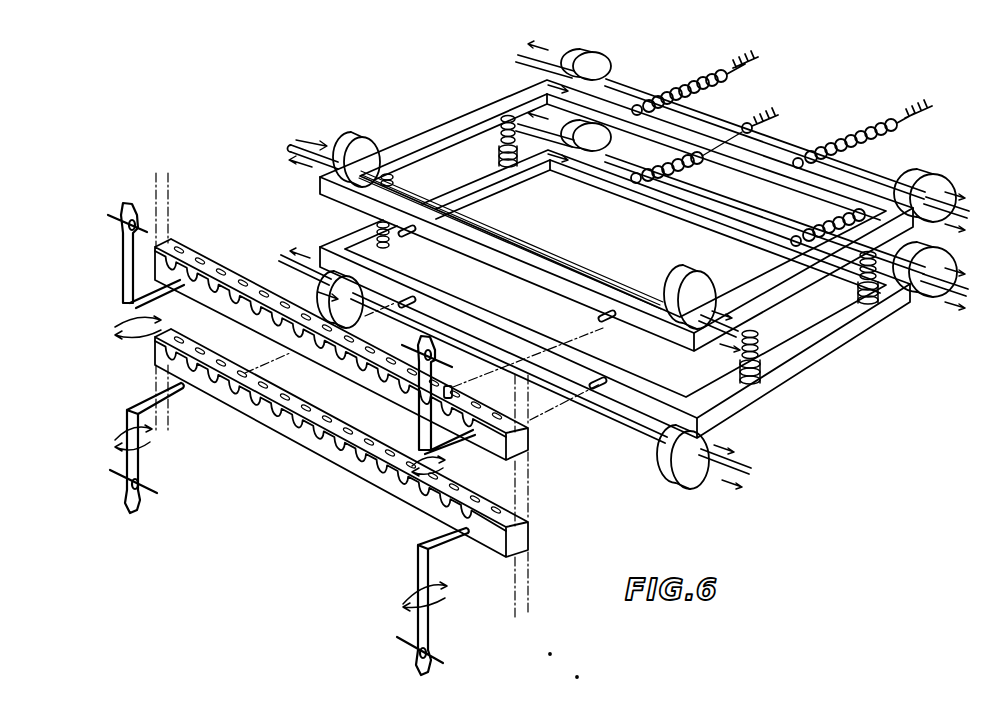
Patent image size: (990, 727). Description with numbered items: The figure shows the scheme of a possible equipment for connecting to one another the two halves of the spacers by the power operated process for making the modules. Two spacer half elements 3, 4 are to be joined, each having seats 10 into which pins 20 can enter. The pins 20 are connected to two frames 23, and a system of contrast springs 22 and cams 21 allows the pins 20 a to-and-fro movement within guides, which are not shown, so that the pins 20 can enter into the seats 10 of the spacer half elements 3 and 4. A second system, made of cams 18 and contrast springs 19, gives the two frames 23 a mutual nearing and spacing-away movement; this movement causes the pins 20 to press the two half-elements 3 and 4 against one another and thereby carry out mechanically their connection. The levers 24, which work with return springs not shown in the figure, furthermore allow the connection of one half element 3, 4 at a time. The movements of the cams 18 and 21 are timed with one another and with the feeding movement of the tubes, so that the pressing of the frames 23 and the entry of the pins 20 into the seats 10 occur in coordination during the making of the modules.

The spacer half element 3 is at (160, 250).
The spacer half element 4 is at (547, 530).
The seat 10 is at (233, 302).
The cam 18 is at (366, 152).
The contrast spring 19 is at (489, 152).
The pin 20 is at (408, 236).
The cam 21 is at (598, 72).
The contrast spring 22 is at (693, 84).
The frame 23 is at (486, 111).
The lever 24 is at (122, 284).